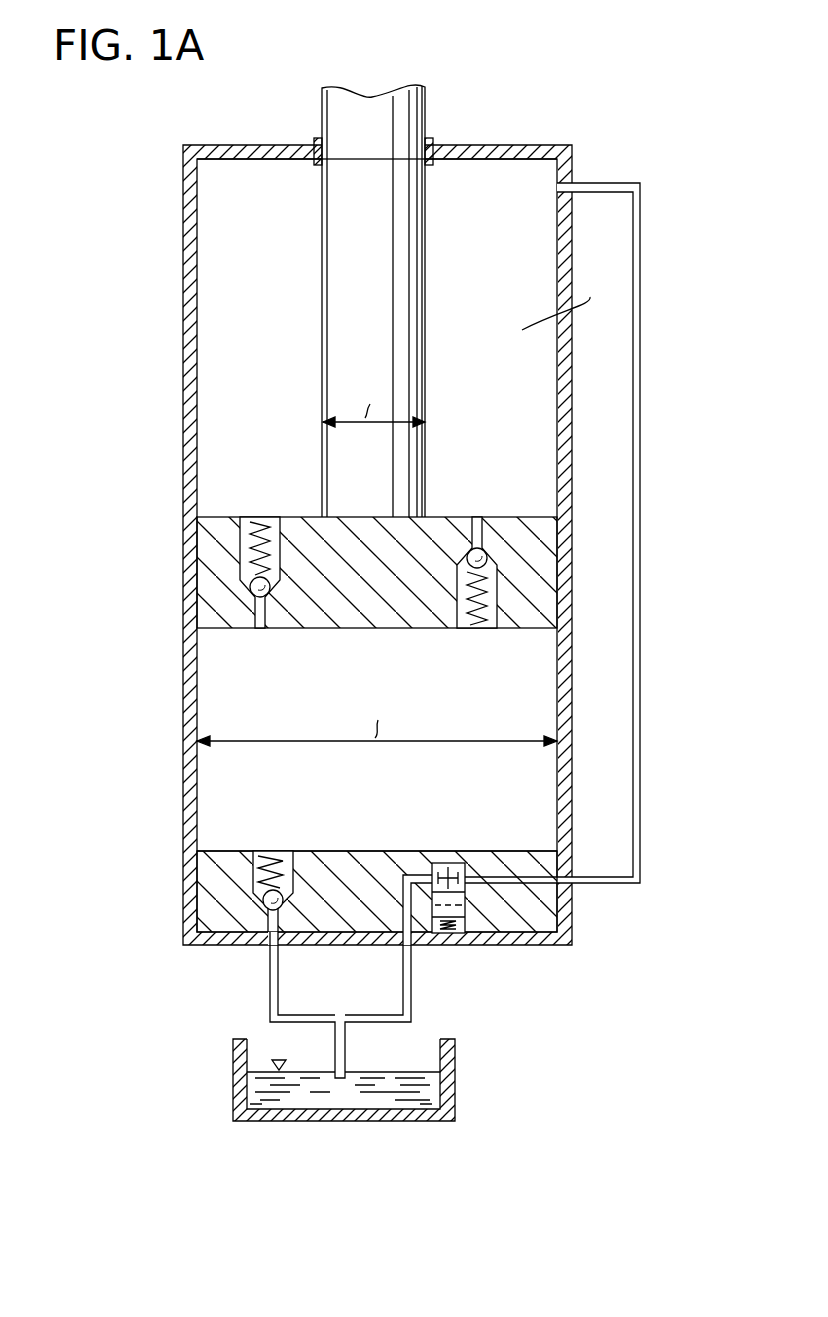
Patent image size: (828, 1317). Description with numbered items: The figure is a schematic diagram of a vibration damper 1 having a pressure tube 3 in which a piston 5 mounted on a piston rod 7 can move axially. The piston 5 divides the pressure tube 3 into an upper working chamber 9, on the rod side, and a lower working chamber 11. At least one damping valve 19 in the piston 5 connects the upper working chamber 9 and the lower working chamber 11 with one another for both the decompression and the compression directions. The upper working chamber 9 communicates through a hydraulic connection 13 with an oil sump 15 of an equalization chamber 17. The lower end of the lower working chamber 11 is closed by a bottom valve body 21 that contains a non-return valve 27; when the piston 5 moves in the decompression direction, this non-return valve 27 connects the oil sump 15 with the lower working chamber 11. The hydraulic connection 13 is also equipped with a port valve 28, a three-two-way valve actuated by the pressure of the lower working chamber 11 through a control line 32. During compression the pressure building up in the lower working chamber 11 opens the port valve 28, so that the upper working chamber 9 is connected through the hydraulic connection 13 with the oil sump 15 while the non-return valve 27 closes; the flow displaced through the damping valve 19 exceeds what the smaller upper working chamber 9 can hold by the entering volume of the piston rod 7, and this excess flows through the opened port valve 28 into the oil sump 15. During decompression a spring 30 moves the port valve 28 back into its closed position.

The vibration damper 1 is at (180, 1028).
The pressure tube 3 is at (188, 757).
The piston 5 is at (207, 553).
The piston rod 7 is at (335, 309).
The upper working chamber 9 is at (471, 180).
The lower working chamber 11 is at (230, 795).
The hydraulic connection 13 is at (642, 375).
The oil sump 15 is at (372, 1100).
The equalization chamber 17 is at (455, 1060).
The damping valve 19 is at (248, 590).
The bottom valve body 21 is at (213, 890).
The non-return valve 27 is at (264, 912).
The port valve 28 is at (533, 894).
The spring 30 is at (452, 935).
The control line 32 is at (451, 860).